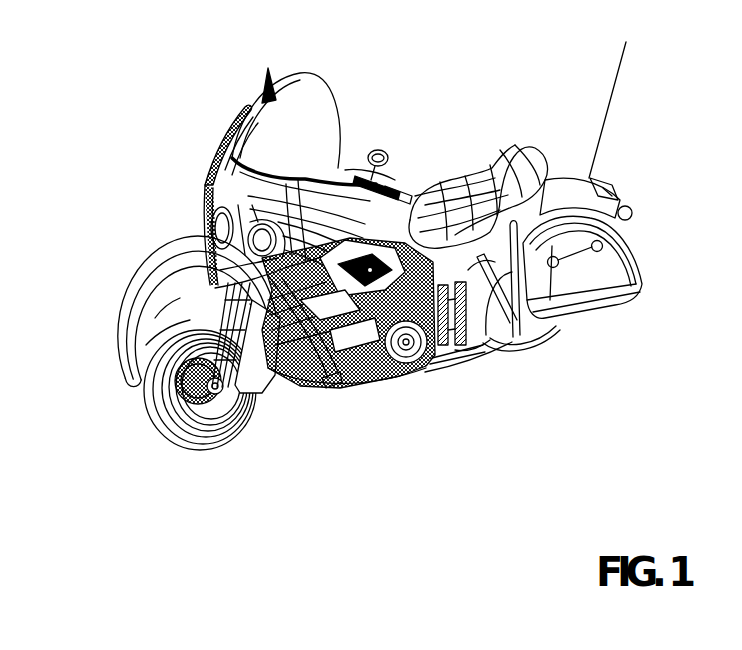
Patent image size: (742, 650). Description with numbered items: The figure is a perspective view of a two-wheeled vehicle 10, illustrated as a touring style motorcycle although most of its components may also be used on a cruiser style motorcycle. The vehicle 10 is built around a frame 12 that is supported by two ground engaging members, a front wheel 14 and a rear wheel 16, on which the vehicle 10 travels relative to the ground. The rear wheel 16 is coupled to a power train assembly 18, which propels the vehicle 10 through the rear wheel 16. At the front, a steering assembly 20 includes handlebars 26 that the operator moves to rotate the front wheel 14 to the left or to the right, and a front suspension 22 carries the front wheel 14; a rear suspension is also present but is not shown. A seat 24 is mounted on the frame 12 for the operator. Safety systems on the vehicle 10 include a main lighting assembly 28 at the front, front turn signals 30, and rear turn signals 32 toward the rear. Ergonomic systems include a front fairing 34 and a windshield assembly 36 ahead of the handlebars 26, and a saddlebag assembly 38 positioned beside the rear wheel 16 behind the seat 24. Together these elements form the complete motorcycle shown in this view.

The two-wheeled vehicle 10 is at (117, 142).
The frame 12 is at (312, 382).
The front wheel 14 is at (248, 444).
The rear wheel 16 is at (581, 348).
The power train assembly 18 is at (420, 356).
The steering assembly 20 is at (351, 134).
The front suspension 22 is at (200, 285).
The seat 24 is at (481, 129).
The handlebars 26 is at (393, 190).
The main lighting assembly 28 is at (222, 228).
The front turn signals 30 is at (310, 200).
The rear turn signals 32 is at (627, 212).
The front fairing 34 is at (228, 156).
The windshield assembly 36 is at (308, 88).
The saddlebag assembly 38 is at (645, 287).